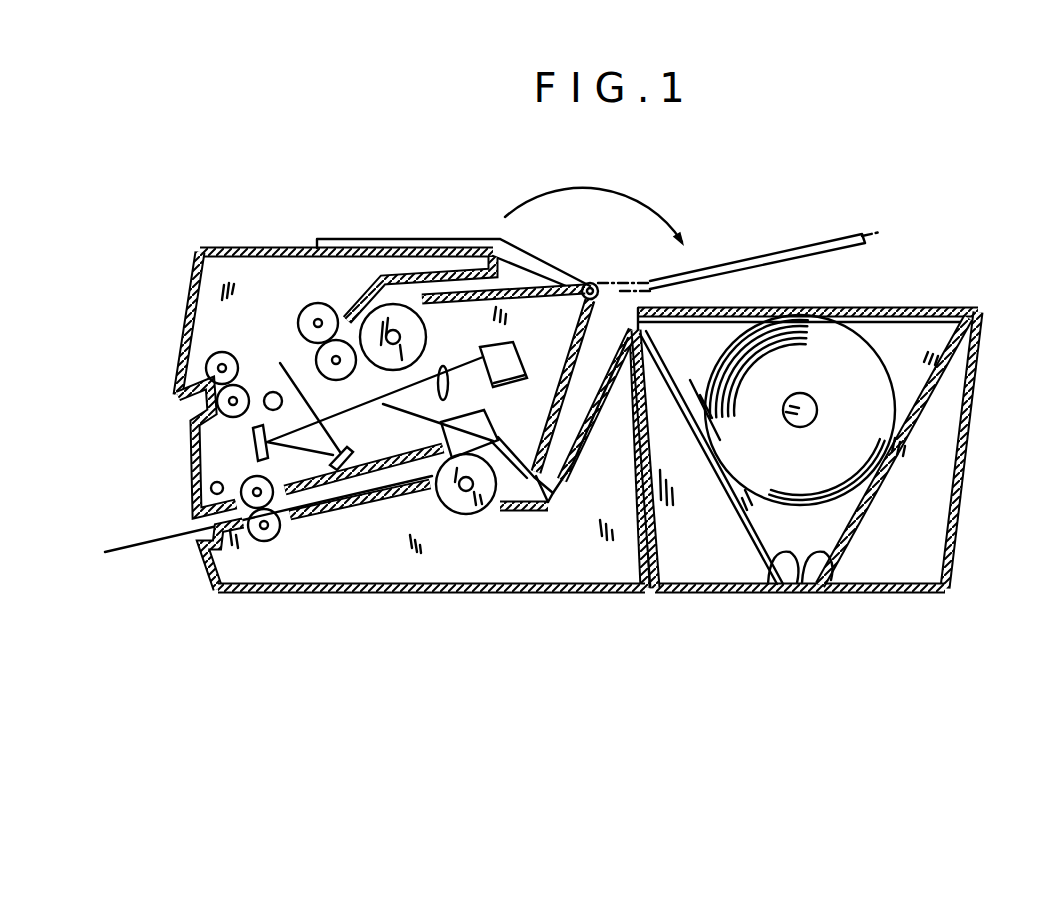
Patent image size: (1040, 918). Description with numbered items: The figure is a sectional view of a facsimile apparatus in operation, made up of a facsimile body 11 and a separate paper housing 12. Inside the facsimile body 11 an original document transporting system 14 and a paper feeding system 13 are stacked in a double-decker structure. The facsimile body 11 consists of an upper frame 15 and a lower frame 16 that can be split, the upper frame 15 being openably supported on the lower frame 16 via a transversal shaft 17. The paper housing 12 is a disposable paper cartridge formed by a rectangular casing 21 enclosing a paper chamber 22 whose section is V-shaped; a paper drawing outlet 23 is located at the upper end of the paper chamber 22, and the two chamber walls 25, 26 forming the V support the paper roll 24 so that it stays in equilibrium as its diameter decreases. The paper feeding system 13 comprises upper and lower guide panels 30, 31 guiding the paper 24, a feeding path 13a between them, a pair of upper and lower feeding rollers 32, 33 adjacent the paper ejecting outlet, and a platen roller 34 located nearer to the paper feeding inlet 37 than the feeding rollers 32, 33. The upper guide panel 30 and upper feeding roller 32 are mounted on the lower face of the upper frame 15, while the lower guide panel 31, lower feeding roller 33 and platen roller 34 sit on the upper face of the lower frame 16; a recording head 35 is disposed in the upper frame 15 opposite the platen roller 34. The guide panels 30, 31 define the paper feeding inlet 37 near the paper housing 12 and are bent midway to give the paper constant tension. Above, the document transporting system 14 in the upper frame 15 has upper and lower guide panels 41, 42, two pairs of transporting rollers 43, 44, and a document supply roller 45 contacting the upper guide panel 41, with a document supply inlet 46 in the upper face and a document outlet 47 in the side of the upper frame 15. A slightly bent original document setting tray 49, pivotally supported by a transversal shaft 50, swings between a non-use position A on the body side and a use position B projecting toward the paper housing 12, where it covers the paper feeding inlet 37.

The facsimile body 11 is at (227, 297).
The paper housing 12 is at (935, 508).
The paper feeding system 13 is at (360, 515).
The feeding path 13a is at (547, 482).
The original document transporting system 14 is at (336, 296).
The upper frame 15 is at (198, 290).
The lower frame 16 is at (440, 593).
The transversal shaft 17 is at (211, 489).
The casing 21 is at (973, 383).
The paper chamber 22 is at (913, 343).
The paper drawing outlet 23 is at (660, 298).
The paper roll 24 is at (840, 347).
The chamber wall 25 is at (775, 588).
The chamber wall 26 is at (809, 560).
The upper guide panel 30 is at (565, 372).
The lower guide panel 31 is at (580, 458).
The upper feeding roller 32 is at (246, 482).
The lower feeding roller 33 is at (260, 552).
The platen roller 34 is at (468, 507).
The recording head 35 is at (478, 413).
The paper feeding inlet 37 is at (600, 327).
The upper guide panel 41 is at (277, 390).
The lower guide panel 42 is at (463, 297).
The upper transporting roller 43 is at (222, 352).
The lower transporting roller 44 is at (315, 310).
The document supply roller 45 is at (396, 304).
The document supply inlet 46 is at (485, 279).
The document outlet 47 is at (192, 410).
The original document setting tray 49 is at (430, 244).
The transversal shaft 50 is at (585, 287).
The non-use position A is at (348, 236).
The use position B is at (776, 248).